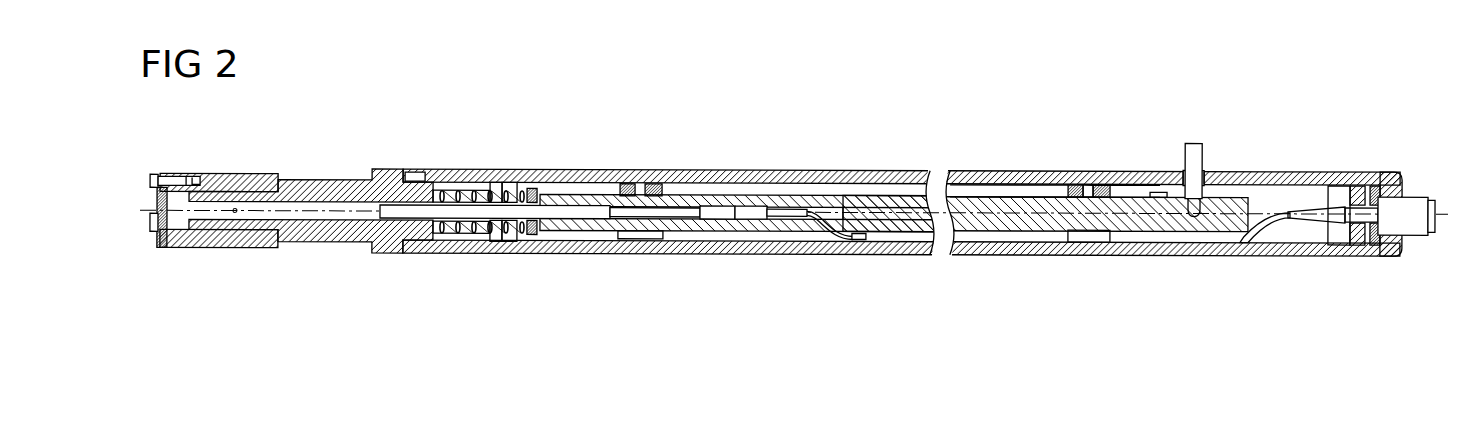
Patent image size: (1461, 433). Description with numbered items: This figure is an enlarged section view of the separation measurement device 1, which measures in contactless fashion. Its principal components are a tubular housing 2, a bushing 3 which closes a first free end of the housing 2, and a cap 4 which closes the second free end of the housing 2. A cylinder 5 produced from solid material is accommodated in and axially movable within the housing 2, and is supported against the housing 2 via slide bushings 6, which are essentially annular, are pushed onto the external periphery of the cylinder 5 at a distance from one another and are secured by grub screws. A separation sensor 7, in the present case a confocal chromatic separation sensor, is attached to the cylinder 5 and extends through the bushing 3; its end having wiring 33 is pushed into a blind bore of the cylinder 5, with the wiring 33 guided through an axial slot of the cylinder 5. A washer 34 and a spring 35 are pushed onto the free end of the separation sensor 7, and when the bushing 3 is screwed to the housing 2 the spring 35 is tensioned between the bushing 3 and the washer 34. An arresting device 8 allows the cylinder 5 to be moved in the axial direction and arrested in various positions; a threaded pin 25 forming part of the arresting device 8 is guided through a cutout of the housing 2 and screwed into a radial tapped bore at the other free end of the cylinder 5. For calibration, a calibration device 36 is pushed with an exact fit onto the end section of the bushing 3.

The separation measurement device 1 is at (1320, 130).
The tubular housing 2 is at (723, 172).
The bushing 3 is at (318, 182).
The cap 4 is at (1390, 182).
The cylinder 5 is at (880, 198).
The slide bushings 6 is at (653, 184).
The separation sensor 7 is at (573, 206).
The arresting device 8 is at (1190, 130).
The threaded pin 25 is at (1197, 157).
The wiring 33 is at (788, 204).
The washer 34 is at (532, 188).
The spring 35 is at (503, 183).
The calibration device 36 is at (241, 162).